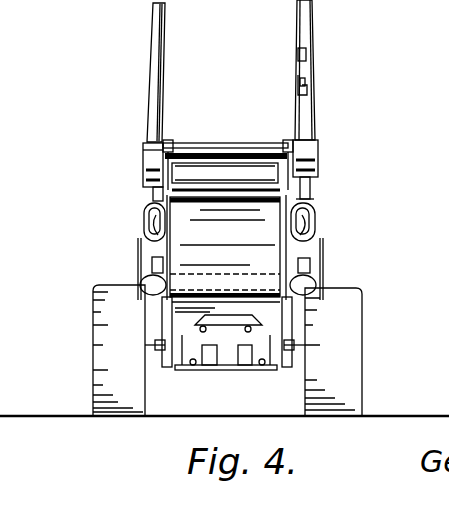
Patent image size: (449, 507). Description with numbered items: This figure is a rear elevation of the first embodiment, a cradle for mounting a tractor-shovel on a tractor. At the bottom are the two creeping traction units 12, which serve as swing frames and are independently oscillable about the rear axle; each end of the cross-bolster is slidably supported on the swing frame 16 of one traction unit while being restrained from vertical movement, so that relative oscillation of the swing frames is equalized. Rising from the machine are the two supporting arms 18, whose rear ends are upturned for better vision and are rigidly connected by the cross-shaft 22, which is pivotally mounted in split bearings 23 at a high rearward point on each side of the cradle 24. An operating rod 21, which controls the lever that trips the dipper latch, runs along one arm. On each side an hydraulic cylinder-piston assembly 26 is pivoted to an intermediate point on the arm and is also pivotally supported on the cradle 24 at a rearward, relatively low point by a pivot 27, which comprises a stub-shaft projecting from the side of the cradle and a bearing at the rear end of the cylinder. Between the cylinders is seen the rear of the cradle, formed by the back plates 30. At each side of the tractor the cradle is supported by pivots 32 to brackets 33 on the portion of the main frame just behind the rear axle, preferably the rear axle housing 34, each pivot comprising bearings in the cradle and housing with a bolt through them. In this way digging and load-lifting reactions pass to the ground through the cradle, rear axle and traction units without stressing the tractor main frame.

The creeping traction units 12 is at (102, 370).
The swing frame 16 is at (312, 115).
The supporting arms 18 is at (153, 107).
The operating rod 21 is at (310, 50).
The cross-shaft 22 is at (229, 143).
The split bearings 23 is at (170, 141).
The cradle 24 is at (152, 192).
The hydraulic cylinder-piston assembly 26 is at (143, 246).
The pivot 27 is at (136, 279).
The back plates 30 is at (224, 255).
The pivots 32 is at (160, 345).
The brackets 33 is at (173, 368).
The rear axle housing 34 is at (158, 368).